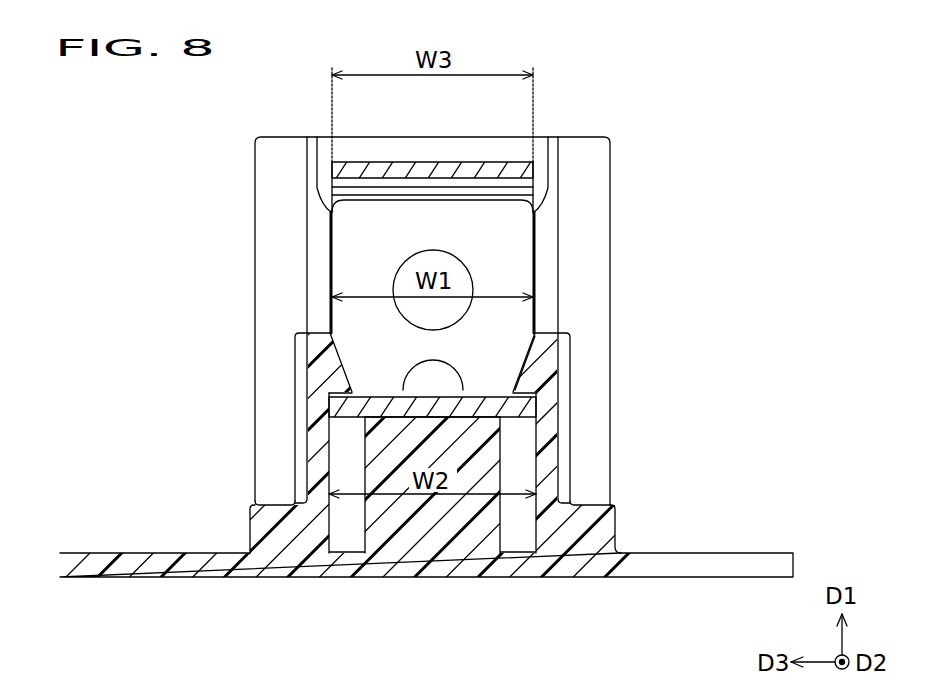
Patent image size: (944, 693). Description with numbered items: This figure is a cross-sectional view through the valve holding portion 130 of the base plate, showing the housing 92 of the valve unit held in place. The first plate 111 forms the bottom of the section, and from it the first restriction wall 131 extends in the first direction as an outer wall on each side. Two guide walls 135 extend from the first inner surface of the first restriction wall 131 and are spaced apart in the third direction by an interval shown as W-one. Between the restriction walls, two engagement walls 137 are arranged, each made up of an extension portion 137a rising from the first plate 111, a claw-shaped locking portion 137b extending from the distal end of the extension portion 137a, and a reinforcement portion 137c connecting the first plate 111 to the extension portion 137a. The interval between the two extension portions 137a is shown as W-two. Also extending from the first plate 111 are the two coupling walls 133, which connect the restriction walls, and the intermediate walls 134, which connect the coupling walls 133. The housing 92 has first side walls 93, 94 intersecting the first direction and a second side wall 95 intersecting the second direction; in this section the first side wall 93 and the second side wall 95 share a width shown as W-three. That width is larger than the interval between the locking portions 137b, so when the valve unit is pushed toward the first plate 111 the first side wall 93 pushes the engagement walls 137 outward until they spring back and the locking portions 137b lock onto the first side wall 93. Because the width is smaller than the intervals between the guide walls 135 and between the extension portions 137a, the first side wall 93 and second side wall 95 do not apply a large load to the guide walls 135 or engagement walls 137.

The valve holding portion 130 is at (676, 458).
The first plate 111 is at (70, 552).
The first restriction wall 131 is at (592, 137).
The guide wall 135 is at (307, 172).
The engagement wall 137 is at (305, 419).
The extension portion 137a is at (560, 480).
The locking portion 137b is at (520, 380).
The reinforcement portion 137c is at (615, 521).
The housing 92 is at (351, 160).
The first side wall 93 is at (382, 398).
The first side wall 94 is at (362, 179).
The second side wall 95 is at (510, 258).
The coupling wall 133 is at (352, 548).
The intermediate wall 134 is at (438, 535).